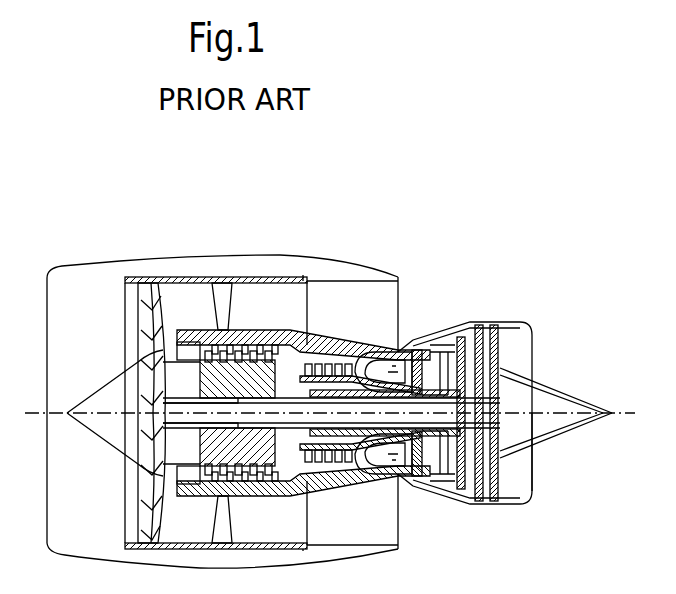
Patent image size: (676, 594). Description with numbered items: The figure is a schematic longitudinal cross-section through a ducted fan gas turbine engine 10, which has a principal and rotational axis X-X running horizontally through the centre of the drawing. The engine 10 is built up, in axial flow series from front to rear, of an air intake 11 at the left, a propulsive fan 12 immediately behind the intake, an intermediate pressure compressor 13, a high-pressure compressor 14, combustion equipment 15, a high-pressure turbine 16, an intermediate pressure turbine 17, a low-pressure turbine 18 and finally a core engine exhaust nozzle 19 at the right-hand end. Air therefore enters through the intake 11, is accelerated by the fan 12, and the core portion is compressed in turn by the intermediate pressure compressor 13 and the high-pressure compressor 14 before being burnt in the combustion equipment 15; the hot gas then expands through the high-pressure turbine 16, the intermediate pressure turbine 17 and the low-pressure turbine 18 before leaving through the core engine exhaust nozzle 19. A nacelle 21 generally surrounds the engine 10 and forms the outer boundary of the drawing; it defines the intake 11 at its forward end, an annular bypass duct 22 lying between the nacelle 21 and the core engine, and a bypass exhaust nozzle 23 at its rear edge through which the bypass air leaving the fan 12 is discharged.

The ducted fan gas turbine engine 10 is at (100, 237).
The air intake 11 is at (83, 281).
The propulsive fan 12 is at (143, 507).
The intermediate pressure compressor 13 is at (250, 493).
The high-pressure compressor 14 is at (333, 356).
The combustion equipment 15 is at (362, 470).
The high-pressure turbine 16 is at (413, 474).
The intermediate pressure turbine 17 is at (450, 347).
The low-pressure turbine 18 is at (457, 497).
The core engine exhaust nozzle 19 is at (527, 326).
The nacelle 21 is at (224, 256).
The bypass duct 22 is at (376, 311).
The bypass exhaust nozzle 23 is at (400, 277).